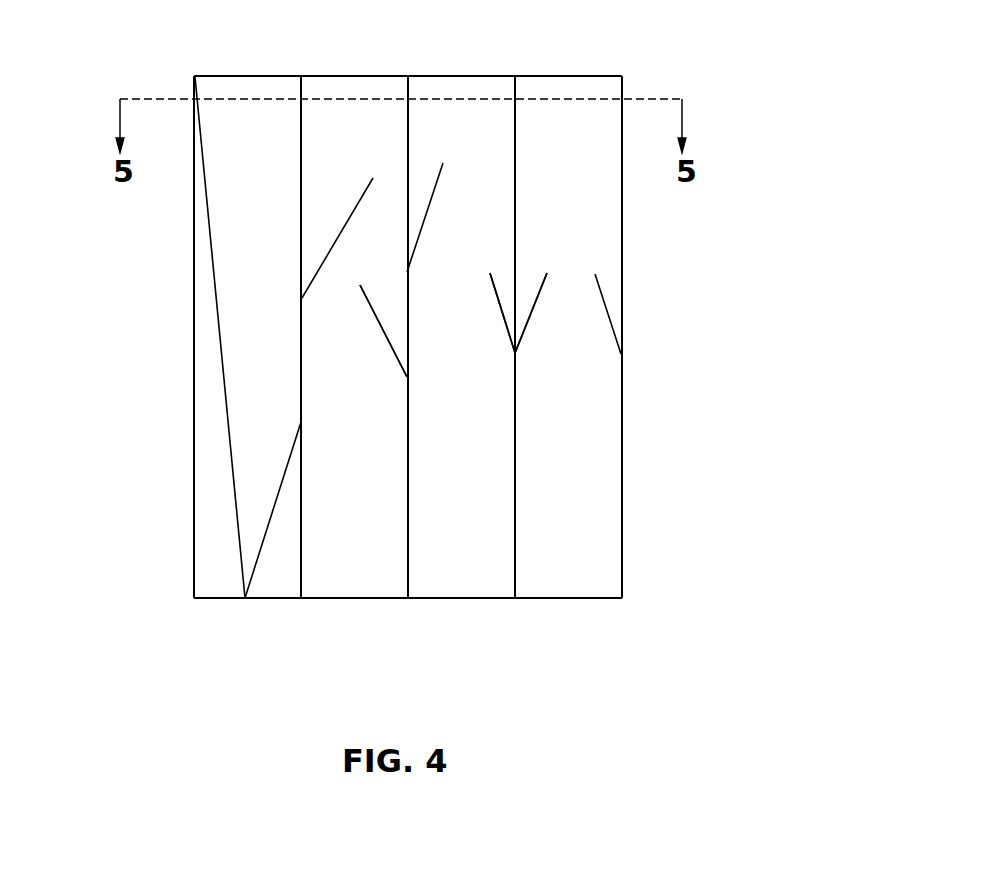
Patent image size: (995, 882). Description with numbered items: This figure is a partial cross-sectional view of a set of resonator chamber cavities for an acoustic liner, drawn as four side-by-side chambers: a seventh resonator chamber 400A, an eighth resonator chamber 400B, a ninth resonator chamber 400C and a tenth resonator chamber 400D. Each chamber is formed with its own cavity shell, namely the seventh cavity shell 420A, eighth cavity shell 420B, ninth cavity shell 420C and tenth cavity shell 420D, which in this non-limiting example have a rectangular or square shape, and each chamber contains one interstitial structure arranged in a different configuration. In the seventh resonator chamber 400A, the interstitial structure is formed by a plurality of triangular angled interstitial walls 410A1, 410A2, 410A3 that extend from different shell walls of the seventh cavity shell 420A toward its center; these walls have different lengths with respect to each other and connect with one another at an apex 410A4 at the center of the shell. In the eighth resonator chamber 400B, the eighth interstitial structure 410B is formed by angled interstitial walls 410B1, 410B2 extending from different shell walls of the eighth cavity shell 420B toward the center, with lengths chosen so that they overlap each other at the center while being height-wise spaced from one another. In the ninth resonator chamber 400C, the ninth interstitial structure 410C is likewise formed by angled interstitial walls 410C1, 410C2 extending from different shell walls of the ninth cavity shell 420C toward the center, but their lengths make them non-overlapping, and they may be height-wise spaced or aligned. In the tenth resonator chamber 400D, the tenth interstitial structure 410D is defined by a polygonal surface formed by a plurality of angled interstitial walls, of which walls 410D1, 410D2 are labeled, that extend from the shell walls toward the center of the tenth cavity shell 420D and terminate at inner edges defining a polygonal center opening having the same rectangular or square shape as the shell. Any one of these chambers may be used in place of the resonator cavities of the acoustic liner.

The seventh resonator chamber 400A is at (244, 76).
The eighth resonator chamber 400B is at (338, 76).
The ninth resonator chamber 400C is at (438, 76).
The tenth resonator chamber 400D is at (537, 76).
The angled interstitial wall 410A1 is at (272, 598).
The angled interstitial wall 410A2 is at (208, 530).
The angled interstitial wall 410A3 is at (240, 284).
The apex 410A4 is at (245, 598).
The eighth interstitial structure 410B is at (388, 367).
The angled interstitial wall 410B1 is at (306, 288).
The angled interstitial wall 410B2 is at (385, 296).
The ninth interstitial structure 410C is at (502, 343).
The angled interstitial wall 410C1 is at (488, 282).
The angled interstitial wall 410C2 is at (437, 195).
The tenth interstitial structure 410D is at (575, 328).
The angled interstitial wall 410D1 is at (547, 285).
The angled interstitial wall 410D2 is at (603, 298).
The seventh cavity shell 420A is at (194, 328).
The eighth cavity shell 420B is at (350, 563).
The ninth cavity shell 420C is at (435, 583).
The tenth cavity shell 420D is at (563, 583).